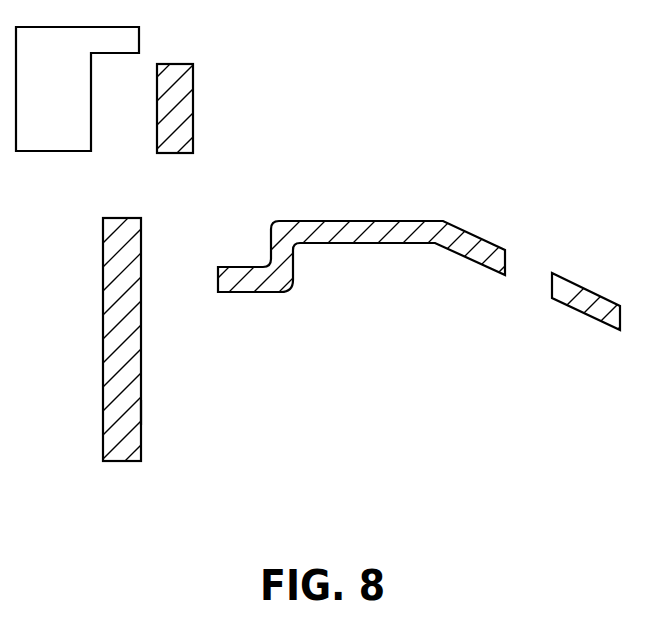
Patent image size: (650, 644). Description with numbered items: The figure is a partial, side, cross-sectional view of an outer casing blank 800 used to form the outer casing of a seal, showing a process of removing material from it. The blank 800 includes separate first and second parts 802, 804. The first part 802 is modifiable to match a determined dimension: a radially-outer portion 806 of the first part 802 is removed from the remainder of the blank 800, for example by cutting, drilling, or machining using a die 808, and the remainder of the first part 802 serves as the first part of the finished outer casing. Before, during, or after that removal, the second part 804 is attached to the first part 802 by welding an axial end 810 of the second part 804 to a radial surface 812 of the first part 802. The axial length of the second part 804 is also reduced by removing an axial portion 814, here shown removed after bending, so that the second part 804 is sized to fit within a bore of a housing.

The outer casing blank 800 is at (141, 337).
The first part 802 is at (103, 302).
The second part 804 is at (373, 221).
The radially-outer portion 806 is at (193, 95).
The die 808 is at (72, 106).
The axial end 810 is at (218, 282).
The radial surface 812 is at (141, 412).
The axial portion 814 is at (590, 312).